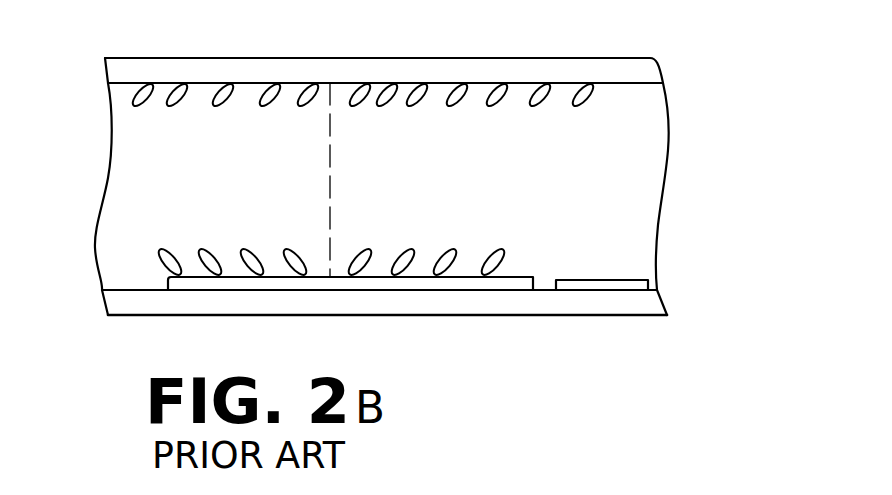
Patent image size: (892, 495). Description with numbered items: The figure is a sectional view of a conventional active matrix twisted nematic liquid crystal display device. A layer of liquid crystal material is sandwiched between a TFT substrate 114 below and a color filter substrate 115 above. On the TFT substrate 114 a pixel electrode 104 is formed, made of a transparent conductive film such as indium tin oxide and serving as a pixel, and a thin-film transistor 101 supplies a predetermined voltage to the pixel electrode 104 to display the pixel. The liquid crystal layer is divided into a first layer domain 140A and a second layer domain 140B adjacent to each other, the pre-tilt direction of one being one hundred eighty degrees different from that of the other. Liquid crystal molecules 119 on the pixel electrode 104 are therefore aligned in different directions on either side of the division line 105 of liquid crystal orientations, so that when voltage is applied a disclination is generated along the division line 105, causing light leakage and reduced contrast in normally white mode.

The thin-film transistor 101 is at (623, 280).
The pixel electrode 104 is at (450, 283).
The division line of liquid crystal orientations 105 is at (334, 207).
The TFT substrate 114 is at (560, 308).
The color filter substrate 115 is at (515, 70).
The liquid crystal molecules 119 is at (128, 83).
The first layer domain 140A is at (133, 157).
The second layer domain 140B is at (640, 153).